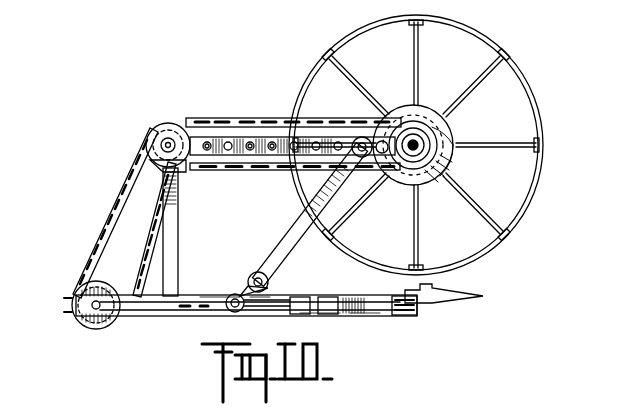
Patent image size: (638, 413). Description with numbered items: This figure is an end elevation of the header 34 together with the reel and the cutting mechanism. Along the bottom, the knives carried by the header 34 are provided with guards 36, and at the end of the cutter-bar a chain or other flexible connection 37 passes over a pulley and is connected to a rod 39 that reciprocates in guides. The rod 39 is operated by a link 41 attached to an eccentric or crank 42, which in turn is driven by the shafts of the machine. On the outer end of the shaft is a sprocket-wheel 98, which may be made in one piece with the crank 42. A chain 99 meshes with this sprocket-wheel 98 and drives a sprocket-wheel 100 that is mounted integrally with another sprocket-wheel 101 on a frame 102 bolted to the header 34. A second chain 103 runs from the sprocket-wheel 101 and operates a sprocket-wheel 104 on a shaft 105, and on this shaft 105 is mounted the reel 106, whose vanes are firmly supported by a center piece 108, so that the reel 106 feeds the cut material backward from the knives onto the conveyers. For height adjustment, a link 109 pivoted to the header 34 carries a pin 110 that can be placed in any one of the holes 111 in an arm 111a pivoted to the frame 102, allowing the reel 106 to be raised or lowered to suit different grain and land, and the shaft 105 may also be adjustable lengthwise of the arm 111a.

The header 34 is at (208, 294).
The guards 36 is at (470, 293).
The chain or other flexible connection 37 is at (366, 309).
The rod 39 is at (262, 313).
The link 41 is at (142, 314).
The eccentric or crank 42 is at (105, 329).
The sprocket-wheel 98 is at (110, 283).
The chain 99 is at (110, 214).
The sprocket-wheel 100 is at (172, 124).
The sprocket-wheel 101 is at (182, 172).
The frame 102 is at (179, 247).
The chain 103 is at (238, 171).
The sprocket-wheel 104 is at (437, 126).
The shaft 105 is at (453, 155).
The reel 106 is at (507, 65).
The center piece 108 is at (452, 137).
The link 109 is at (285, 242).
The pin 110 is at (357, 139).
The holes 111 is at (252, 143).
The arm 111a is at (213, 143).